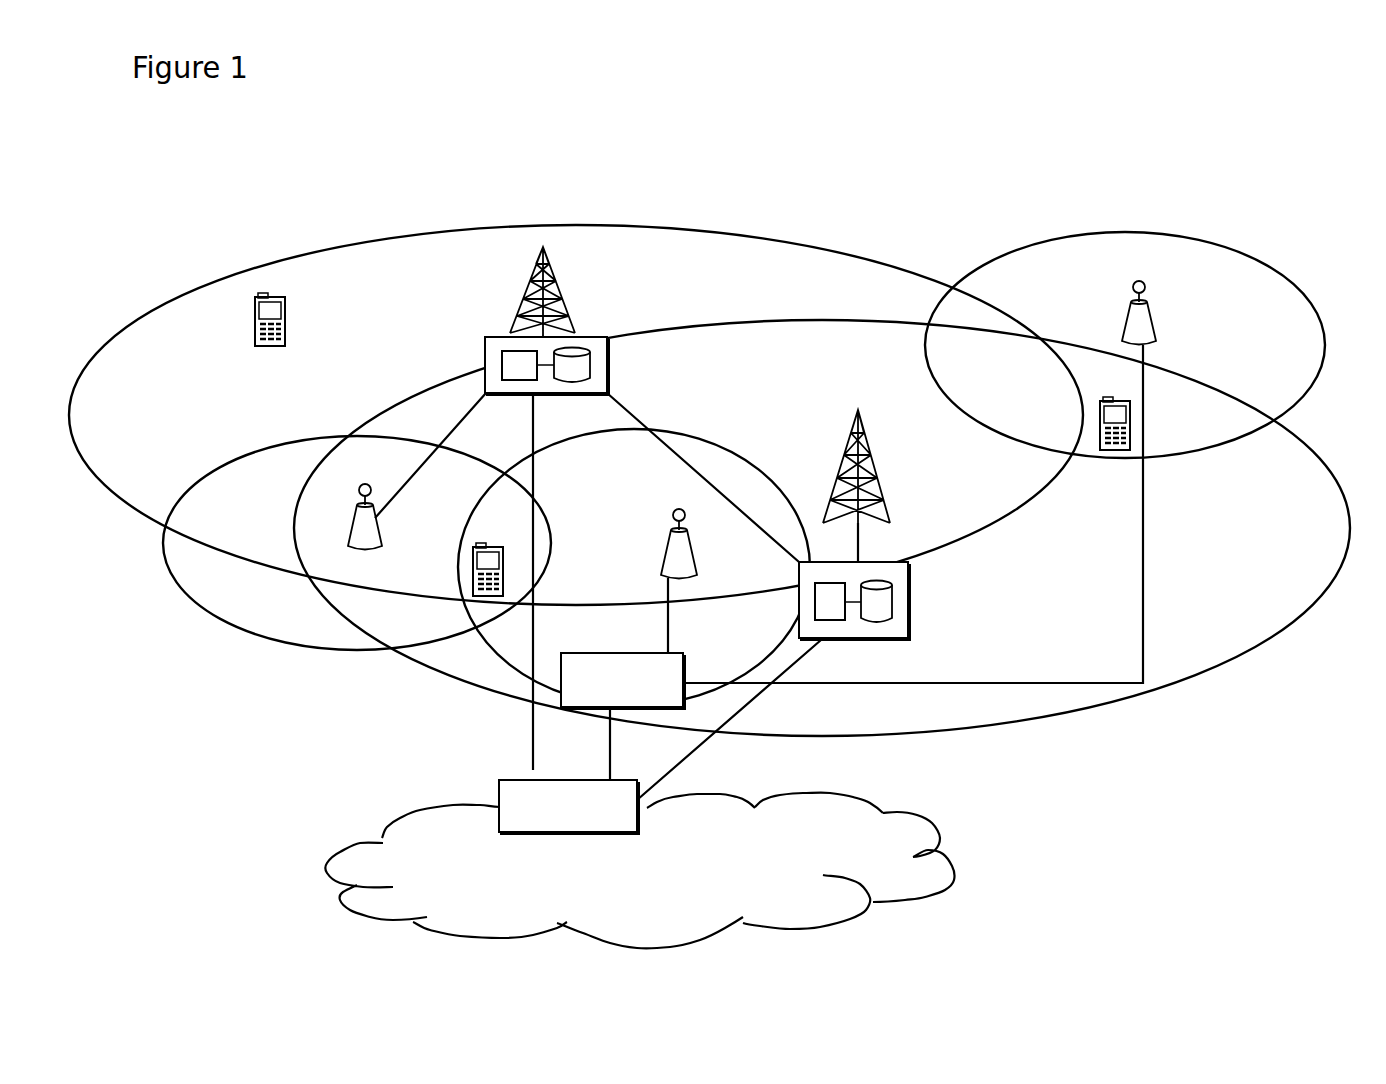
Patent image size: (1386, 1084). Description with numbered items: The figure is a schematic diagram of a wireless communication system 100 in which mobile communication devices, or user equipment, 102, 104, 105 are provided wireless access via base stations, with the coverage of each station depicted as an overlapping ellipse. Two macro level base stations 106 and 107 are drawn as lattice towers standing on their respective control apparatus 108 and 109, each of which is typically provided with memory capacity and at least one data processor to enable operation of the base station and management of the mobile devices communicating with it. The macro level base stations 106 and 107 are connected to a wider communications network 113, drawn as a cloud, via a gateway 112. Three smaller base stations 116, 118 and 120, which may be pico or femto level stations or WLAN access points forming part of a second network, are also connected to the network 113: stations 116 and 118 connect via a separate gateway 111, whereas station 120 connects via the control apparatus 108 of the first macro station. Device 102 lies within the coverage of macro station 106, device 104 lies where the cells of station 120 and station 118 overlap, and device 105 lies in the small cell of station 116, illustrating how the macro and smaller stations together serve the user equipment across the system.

The wireless communication system 100 is at (172, 278).
The mobile communication device 102 is at (255, 333).
The mobile communication device 104 is at (485, 572).
The mobile communication device 105 is at (1114, 452).
The macro level base station 106 is at (527, 302).
The macro level base station 107 is at (885, 485).
The control apparatus 108 is at (483, 352).
The control apparatus 109 is at (897, 628).
The gateway 111 is at (567, 685).
The gateway 112 is at (500, 778).
The wider communications network 113 is at (418, 840).
The smaller base station 116 is at (1123, 317).
The smaller base station 118 is at (680, 565).
The smaller base station 120 is at (350, 522).